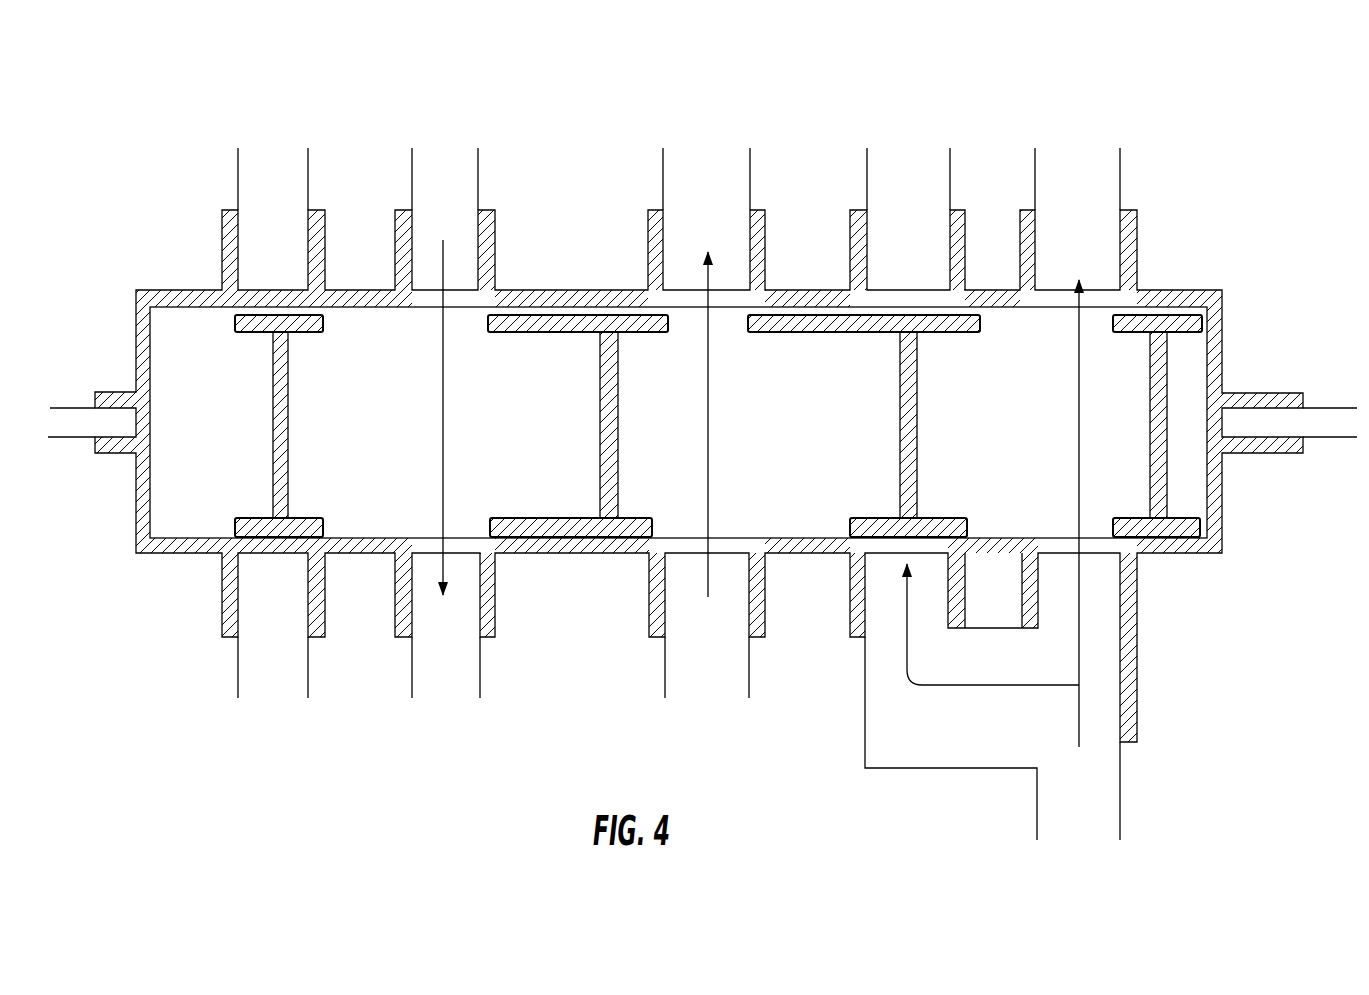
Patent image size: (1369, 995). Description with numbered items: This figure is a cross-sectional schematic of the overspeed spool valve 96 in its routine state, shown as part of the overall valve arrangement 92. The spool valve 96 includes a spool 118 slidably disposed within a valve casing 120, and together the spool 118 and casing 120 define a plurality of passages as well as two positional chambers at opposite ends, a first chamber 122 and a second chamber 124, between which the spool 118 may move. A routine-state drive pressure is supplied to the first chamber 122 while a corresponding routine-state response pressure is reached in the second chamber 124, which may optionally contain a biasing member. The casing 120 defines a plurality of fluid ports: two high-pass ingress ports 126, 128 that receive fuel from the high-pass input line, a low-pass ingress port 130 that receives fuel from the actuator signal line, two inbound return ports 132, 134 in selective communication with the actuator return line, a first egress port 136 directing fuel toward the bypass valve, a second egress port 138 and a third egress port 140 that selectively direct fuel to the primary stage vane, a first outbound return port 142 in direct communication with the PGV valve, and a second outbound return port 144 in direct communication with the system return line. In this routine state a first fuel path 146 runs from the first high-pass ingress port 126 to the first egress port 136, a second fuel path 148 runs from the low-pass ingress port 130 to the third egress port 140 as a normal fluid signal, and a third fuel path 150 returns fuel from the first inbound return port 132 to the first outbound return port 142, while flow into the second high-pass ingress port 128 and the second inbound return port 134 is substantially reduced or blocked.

The valve 92 is at (175, 126).
The spool valve 96 is at (135, 325).
The spool 118 is at (907, 322).
The valve casing 120 is at (513, 296).
The first chamber 122 is at (1190, 468).
The second chamber 124 is at (165, 526).
The first high-pass ingress port 126 is at (1100, 600).
The second high-pass ingress port 128 is at (883, 603).
The low-pass ingress port 130 is at (685, 578).
The first inbound return port 132 is at (426, 270).
The second inbound return port 134 is at (220, 260).
The first egress port 136 is at (1125, 255).
The second egress port 138 is at (883, 262).
The third egress port 140 is at (695, 272).
The first outbound return port 142 is at (428, 571).
The second outbound return port 144 is at (270, 575).
The first fuel path 146 is at (1077, 416).
The second fuel path 148 is at (709, 455).
The third fuel path 150 is at (447, 440).